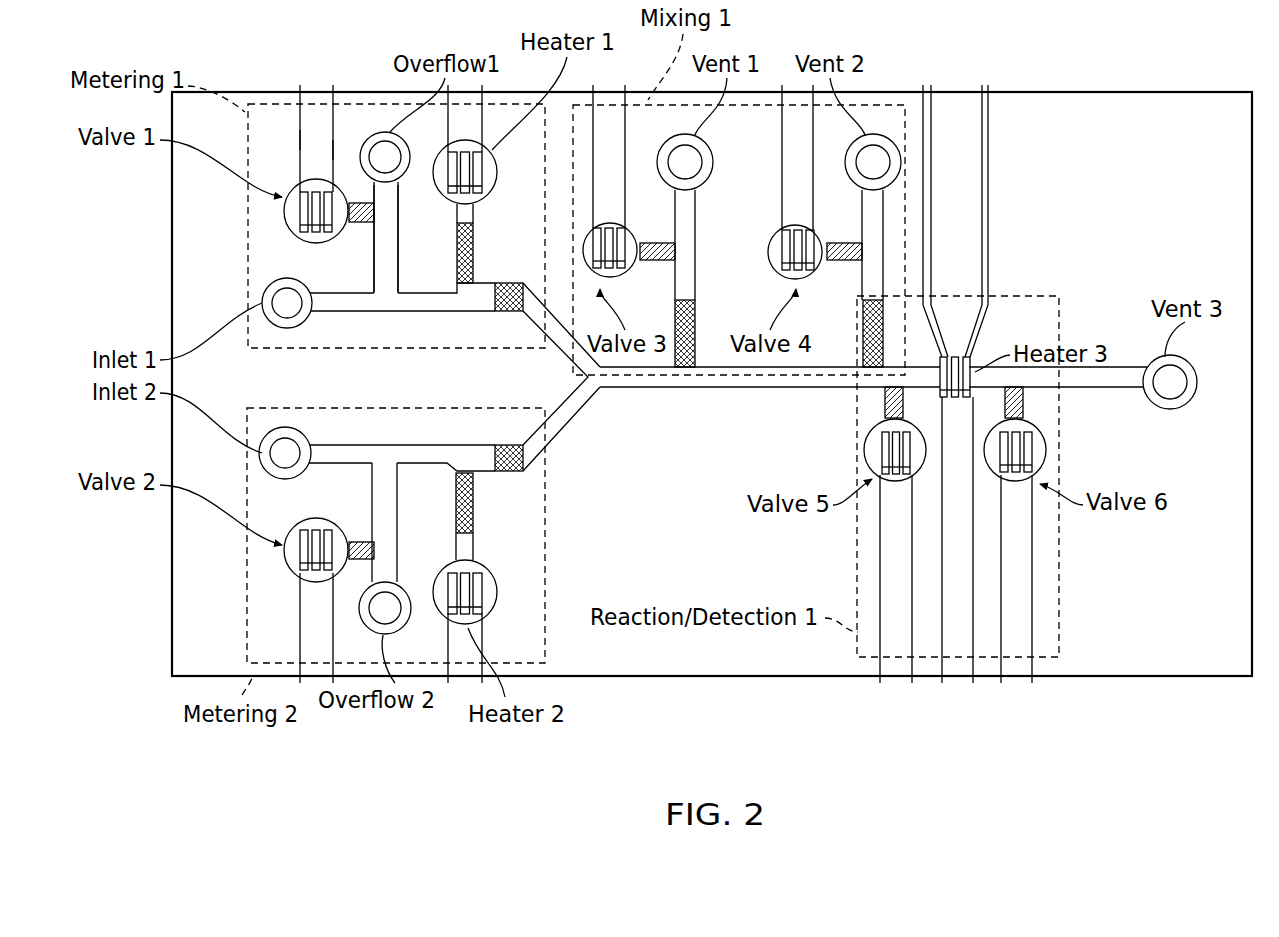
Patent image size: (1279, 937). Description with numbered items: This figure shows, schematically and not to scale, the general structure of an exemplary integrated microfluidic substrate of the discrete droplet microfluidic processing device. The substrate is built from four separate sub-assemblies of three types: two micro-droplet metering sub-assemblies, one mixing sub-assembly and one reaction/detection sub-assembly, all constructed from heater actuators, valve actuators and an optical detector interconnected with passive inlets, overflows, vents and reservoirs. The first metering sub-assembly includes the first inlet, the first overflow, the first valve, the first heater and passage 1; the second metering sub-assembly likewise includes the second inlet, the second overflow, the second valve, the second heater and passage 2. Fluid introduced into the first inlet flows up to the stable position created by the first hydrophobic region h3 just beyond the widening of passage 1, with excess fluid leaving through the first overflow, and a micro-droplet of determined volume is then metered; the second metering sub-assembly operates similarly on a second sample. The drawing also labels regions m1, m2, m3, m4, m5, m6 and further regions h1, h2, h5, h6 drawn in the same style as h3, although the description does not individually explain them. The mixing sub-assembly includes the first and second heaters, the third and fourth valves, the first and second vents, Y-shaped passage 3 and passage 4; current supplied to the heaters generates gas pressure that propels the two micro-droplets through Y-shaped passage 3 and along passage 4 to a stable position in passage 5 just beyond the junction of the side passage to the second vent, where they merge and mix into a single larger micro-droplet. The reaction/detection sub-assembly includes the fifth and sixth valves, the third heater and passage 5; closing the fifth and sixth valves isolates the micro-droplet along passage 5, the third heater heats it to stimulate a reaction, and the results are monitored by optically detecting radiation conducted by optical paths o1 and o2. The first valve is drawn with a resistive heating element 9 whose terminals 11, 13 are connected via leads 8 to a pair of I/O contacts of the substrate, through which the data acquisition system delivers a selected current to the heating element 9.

The leads 8 is at (300, 133).
The terminal 11 is at (307, 173).
The resistive heating element 9 is at (295, 218).
The terminal 13 is at (375, 195).
The metering flow passage 1 m1 is at (363, 223).
The metering flow passage 2 m2 is at (360, 540).
The metering flow passage 3 m3 is at (660, 243).
The metering flow passage 4 m4 is at (848, 243).
The metering flow passage 5 m5 is at (882, 410).
The metering flow passage 6 m6 is at (1025, 410).
The hydrophobic valve portion 1 h1 is at (457, 253).
The hydrophobic valve portion 2 h2 is at (476, 497).
The first hydrophobic region h3 is at (505, 283).
The hydrophobic valve portion 5 h5 is at (673, 311).
The hydrophobic valve portion 6 h6 is at (862, 321).
The passage 1 is at (395, 313).
The passage 2 is at (377, 444).
The Y-shaped passage 3 is at (568, 420).
The passage 4 is at (728, 388).
The passage 5 is at (1120, 367).
The optical path o1 is at (932, 174).
The optical path o2 is at (990, 197).